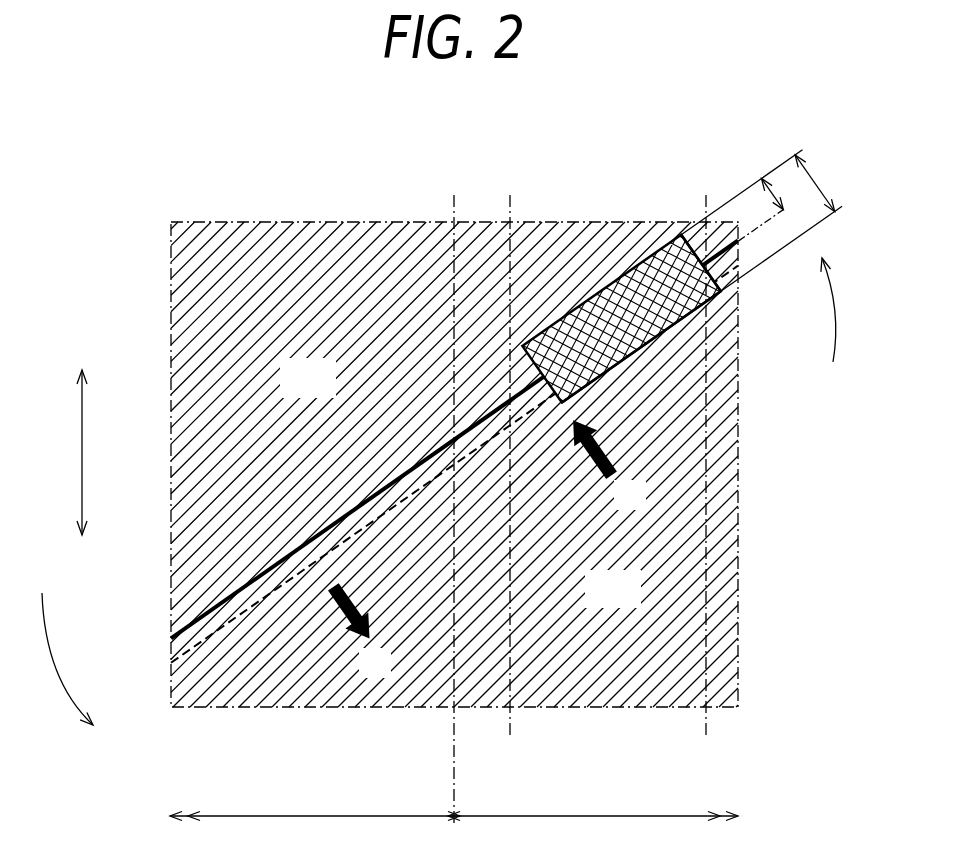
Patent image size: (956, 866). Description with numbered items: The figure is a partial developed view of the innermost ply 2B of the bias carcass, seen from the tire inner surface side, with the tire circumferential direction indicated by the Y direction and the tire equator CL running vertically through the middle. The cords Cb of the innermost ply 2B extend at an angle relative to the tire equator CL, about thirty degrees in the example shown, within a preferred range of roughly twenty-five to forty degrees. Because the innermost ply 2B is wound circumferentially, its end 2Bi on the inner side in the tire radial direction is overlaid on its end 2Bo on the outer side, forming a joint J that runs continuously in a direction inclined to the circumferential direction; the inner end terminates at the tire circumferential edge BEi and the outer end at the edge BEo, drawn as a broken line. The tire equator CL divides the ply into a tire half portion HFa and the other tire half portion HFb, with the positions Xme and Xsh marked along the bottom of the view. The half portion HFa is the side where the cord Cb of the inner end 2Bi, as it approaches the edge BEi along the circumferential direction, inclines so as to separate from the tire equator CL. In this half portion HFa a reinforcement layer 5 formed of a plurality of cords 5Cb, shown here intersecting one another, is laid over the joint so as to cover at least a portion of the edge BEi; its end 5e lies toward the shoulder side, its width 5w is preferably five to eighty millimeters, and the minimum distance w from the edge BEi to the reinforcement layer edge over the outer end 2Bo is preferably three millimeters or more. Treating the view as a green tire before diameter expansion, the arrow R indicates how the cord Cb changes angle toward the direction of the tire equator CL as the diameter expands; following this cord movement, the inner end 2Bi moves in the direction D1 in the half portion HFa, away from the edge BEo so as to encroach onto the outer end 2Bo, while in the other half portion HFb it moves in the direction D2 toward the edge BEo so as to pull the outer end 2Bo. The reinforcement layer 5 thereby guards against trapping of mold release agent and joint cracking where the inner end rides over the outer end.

The innermost ply 2B is at (215, 163).
The end on the outer side in the tire radial direction 2Bo is at (330, 392).
The end on the inner side in the tire radial direction 2Bi is at (636, 603).
The cord Cb is at (313, 250).
The tire equator CL is at (454, 492).
The reinforcement layer 5 is at (610, 300).
The end of element 5 5e is at (655, 252).
The width of the reinforcement layer 5w is at (766, 220).
The minimum distance w is at (765, 205).
The cords of the reinforcement layer 5Cb is at (700, 307).
The tire circumferential edge on the inner side in the tire radial direction BEi is at (207, 612).
The edge on the outer side BEo is at (215, 637).
The joint J is at (125, 632).
The arrow R is at (448, 491).
The Y-direction Y is at (91, 452).
The arrow D1 is at (609, 465).
The arrow D2 is at (359, 631).
The position Xme is at (511, 482).
The shoulder position Xsh is at (704, 482).
The other tire half portion HFb is at (315, 802).
The tire half portion HFa is at (593, 802).